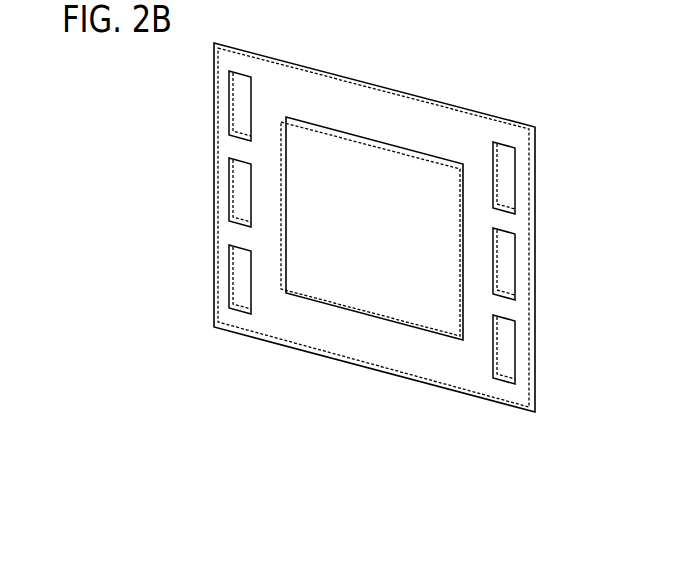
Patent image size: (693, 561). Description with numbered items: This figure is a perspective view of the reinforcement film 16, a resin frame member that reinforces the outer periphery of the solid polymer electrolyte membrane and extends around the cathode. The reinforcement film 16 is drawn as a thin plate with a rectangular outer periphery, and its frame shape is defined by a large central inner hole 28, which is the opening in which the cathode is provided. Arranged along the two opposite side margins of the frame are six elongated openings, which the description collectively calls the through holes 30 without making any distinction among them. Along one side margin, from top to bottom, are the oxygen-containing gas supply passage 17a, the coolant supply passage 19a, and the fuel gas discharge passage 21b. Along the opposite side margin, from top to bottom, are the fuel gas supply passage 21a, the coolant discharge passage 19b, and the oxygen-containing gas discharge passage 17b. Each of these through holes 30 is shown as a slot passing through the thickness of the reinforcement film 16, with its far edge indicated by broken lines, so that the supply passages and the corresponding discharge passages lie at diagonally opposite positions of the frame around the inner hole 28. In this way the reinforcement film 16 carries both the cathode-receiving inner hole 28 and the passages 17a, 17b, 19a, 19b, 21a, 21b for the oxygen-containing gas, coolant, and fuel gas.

The reinforcement film 16 is at (418, 117).
The inner hole 28 is at (330, 280).
The through holes 30 is at (375, 227).
The oxygen-containing gas supply passage 17a is at (243, 97).
The coolant supply passage 19a is at (243, 188).
The fuel gas supply passage 21a is at (506, 180).
The oxygen-containing gas discharge passage 17b is at (506, 355).
The coolant discharge passage 19b is at (506, 267).
The fuel gas discharge passage 21b is at (243, 277).